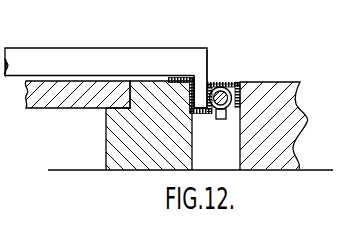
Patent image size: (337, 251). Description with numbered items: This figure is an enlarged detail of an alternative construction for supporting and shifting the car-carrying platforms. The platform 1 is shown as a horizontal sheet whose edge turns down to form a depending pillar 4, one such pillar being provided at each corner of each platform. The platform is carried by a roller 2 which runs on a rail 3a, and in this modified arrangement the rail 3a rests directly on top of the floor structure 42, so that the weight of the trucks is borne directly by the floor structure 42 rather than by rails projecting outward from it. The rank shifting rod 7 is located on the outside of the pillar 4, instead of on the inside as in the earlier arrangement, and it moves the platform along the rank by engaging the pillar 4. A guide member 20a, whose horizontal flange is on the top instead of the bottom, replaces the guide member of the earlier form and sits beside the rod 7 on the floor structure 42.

The platform 1 is at (75, 57).
The roller 2 is at (175, 78).
The rail 3a is at (157, 83).
The pillar 4 is at (202, 82).
The rank shifting rod 7 is at (228, 113).
The guide member 20a is at (237, 80).
The floor structure 42 is at (143, 145).